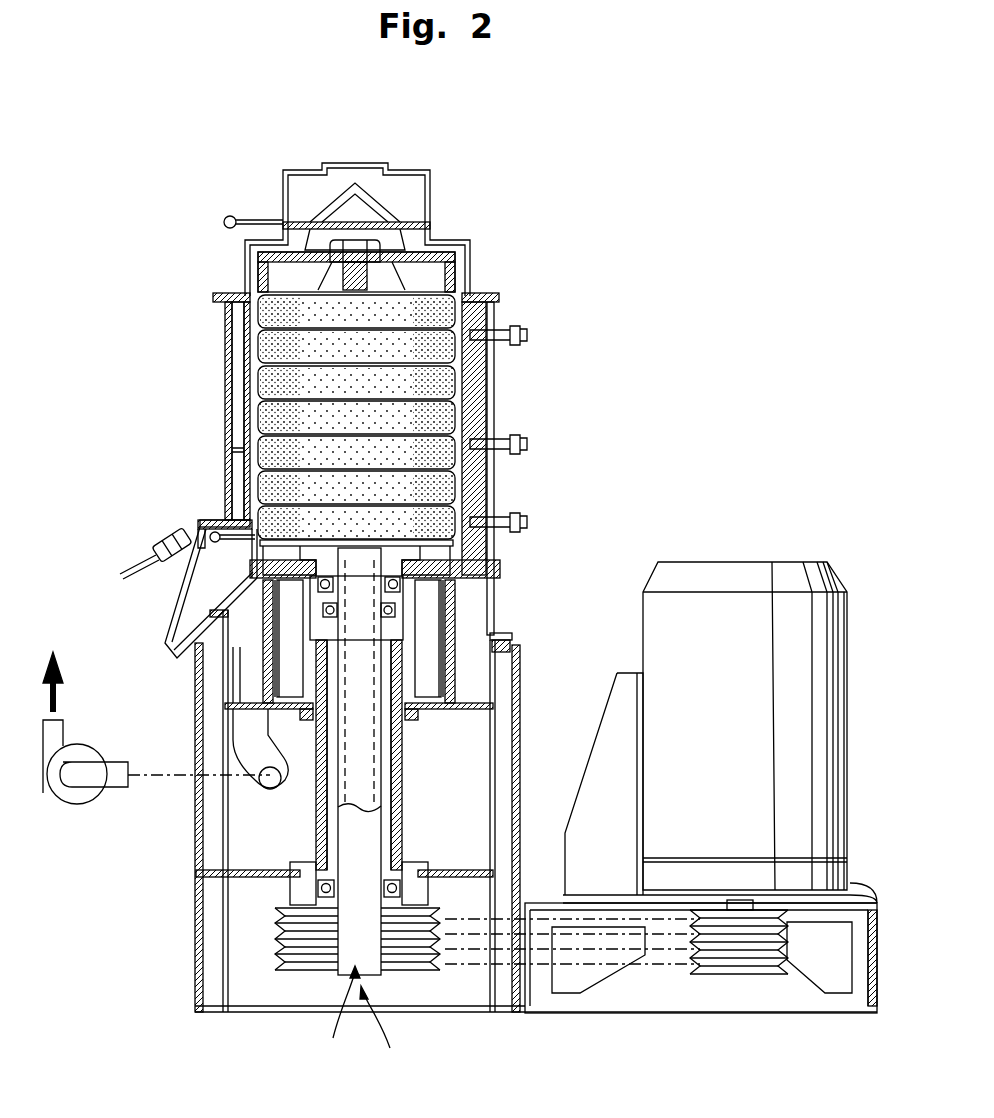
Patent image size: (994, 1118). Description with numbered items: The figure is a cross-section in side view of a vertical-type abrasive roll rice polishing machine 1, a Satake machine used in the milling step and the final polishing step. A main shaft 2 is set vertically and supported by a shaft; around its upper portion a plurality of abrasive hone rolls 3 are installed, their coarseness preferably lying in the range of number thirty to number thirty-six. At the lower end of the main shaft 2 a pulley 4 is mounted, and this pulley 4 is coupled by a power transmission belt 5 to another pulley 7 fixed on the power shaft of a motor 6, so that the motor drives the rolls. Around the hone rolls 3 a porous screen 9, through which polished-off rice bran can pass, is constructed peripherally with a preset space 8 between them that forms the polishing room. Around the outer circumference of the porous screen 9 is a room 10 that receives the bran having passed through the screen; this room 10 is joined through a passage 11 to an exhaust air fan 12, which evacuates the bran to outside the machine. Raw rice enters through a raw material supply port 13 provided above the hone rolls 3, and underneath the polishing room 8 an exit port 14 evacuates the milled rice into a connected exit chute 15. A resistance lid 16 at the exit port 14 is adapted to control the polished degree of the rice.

The vertical-type abrasive roll rice polishing machine 1 is at (603, 338).
The main shaft 2 is at (338, 978).
The abrasive hone rolls 3 is at (440, 408).
The pulley 4 is at (423, 970).
The power transmission belt 5 is at (635, 967).
The motor 6 is at (848, 655).
The pulley 7 is at (737, 977).
The polishing room 8 is at (255, 432).
The porous screen 9 is at (243, 333).
The room for receiving polished-off rice bran 10 is at (237, 373).
The passage 11 is at (258, 657).
The exhaust air fan 12 is at (77, 802).
The raw material supply port 13 is at (356, 163).
The exit port 14 is at (203, 590).
The exit chute 15 is at (172, 633).
The resistance lid 16 is at (196, 553).